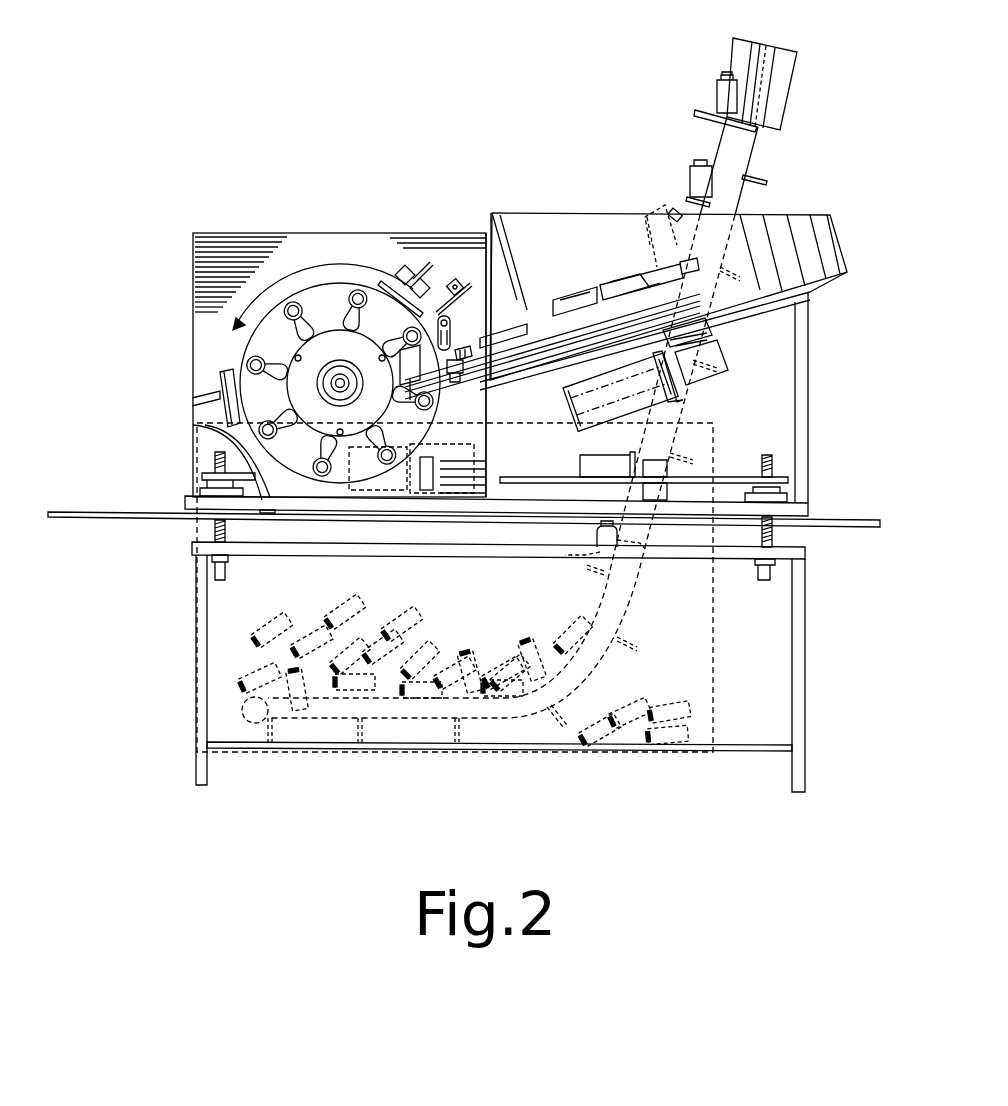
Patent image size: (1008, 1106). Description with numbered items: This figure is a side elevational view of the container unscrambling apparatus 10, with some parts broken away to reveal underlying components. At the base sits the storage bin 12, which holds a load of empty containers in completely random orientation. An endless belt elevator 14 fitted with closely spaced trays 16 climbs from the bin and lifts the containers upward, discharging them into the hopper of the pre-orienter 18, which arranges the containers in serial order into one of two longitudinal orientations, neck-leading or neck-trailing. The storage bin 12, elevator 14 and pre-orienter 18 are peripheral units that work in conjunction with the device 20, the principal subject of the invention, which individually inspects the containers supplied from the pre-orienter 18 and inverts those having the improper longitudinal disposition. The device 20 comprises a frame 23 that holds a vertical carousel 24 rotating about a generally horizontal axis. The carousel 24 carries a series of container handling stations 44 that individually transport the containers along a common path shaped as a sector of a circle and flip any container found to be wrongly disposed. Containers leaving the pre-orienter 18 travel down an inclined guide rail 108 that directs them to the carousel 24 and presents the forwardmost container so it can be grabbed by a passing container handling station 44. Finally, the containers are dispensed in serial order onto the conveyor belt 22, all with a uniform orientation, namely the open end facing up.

The apparatus 10 is at (413, 197).
The storage bin 12 is at (200, 628).
The endless belt elevator 14 is at (750, 157).
The trays 16 is at (783, 96).
The pre-orienter 18 is at (810, 250).
The device 20 is at (297, 233).
The conveyor belt 22 is at (72, 521).
The frame 23 is at (268, 518).
The vertical carousel 24 is at (350, 278).
The container handling station 44 is at (247, 360).
The inclined guide rail 108 is at (510, 372).